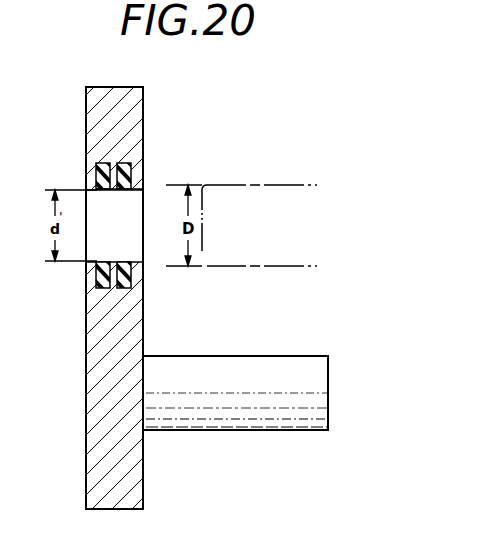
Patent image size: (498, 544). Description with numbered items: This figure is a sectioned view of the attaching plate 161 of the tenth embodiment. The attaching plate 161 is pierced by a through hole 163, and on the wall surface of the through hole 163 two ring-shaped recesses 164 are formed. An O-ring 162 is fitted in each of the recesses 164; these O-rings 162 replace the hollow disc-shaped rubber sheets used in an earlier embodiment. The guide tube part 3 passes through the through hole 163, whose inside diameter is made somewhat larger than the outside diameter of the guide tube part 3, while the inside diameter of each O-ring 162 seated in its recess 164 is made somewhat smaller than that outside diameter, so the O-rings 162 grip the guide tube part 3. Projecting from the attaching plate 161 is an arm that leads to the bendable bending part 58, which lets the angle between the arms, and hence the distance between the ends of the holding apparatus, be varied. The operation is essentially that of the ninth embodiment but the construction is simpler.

The attaching plate 161 is at (100, 128).
The O-rings 162 is at (127, 162).
The through hole 163 is at (147, 187).
The ring-shaped recesses 164 is at (97, 281).
The guide tube part 3 is at (268, 185).
The bending part 58 is at (230, 418).